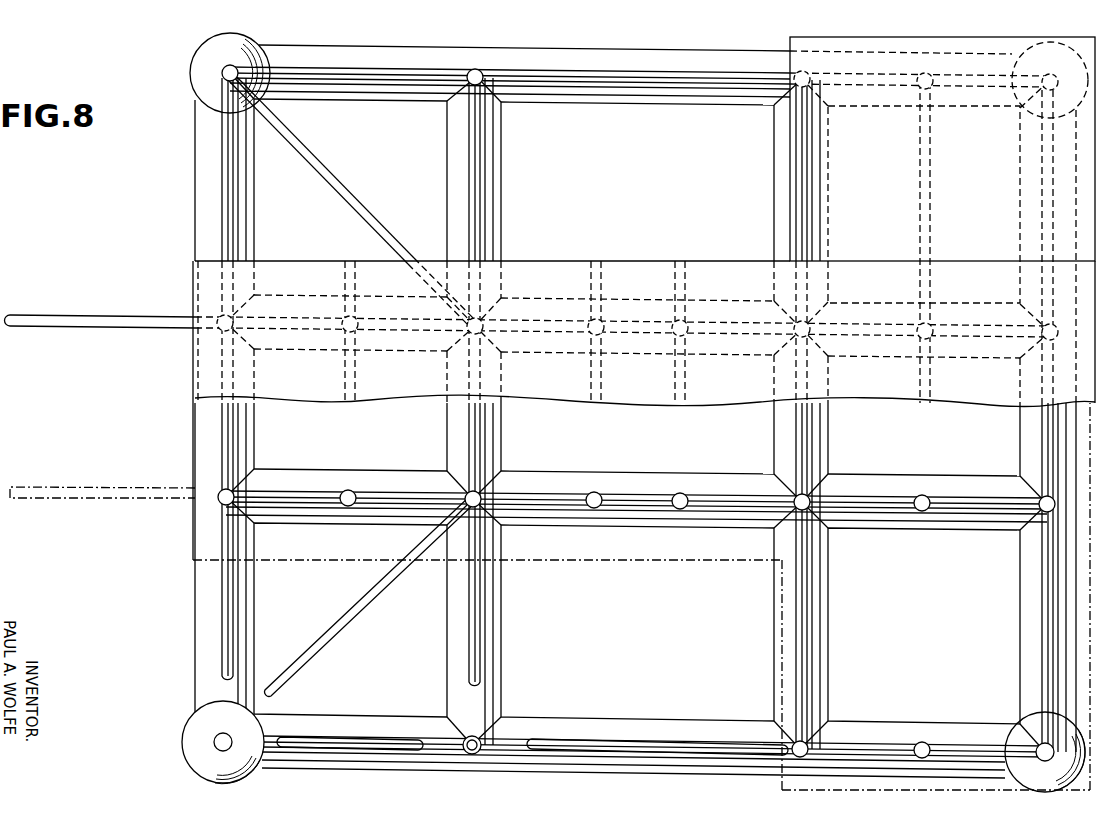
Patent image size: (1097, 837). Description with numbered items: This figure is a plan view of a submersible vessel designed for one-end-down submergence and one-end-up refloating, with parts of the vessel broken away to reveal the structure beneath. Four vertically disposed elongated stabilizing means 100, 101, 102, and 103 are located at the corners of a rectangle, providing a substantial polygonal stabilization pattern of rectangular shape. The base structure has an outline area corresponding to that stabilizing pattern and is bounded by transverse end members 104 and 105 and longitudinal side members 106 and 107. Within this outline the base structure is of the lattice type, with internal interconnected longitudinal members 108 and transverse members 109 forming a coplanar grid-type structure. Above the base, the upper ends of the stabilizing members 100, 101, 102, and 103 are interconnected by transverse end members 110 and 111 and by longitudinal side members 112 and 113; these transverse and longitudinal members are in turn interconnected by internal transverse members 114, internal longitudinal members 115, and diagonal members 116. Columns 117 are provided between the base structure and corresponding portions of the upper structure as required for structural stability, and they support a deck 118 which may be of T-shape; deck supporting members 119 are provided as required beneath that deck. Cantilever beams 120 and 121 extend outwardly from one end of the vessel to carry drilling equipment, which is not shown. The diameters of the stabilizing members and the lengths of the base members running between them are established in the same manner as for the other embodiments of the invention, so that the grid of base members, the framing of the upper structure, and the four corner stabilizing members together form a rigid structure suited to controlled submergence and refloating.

The stabilizing means 100 is at (193, 738).
The stabilizing means 101 is at (203, 76).
The stabilizing means 102 is at (1022, 58).
The stabilizing means 103 is at (1062, 790).
The transverse end member 104 is at (200, 600).
The transverse end member 105 is at (1066, 540).
The longitudinal side member 106 is at (577, 52).
The longitudinal side member 107 is at (580, 775).
The internal longitudinal member 108 is at (655, 304).
The internal transverse member 109 is at (500, 216).
The transverse end member 110 is at (215, 424).
The transverse end member 111 is at (1040, 640).
The longitudinal side member 112 is at (692, 76).
The longitudinal side member 113 is at (376, 736).
The internal transverse member 114 is at (480, 166).
The internal longitudinal member 115 is at (479, 68).
The diagonal member 116 is at (326, 170).
The column 117 is at (925, 510).
The deck 118 is at (1085, 262).
The deck supporting member 119 is at (928, 190).
The cantilever beam 120 is at (92, 316).
The cantilever beam 121 is at (65, 490).